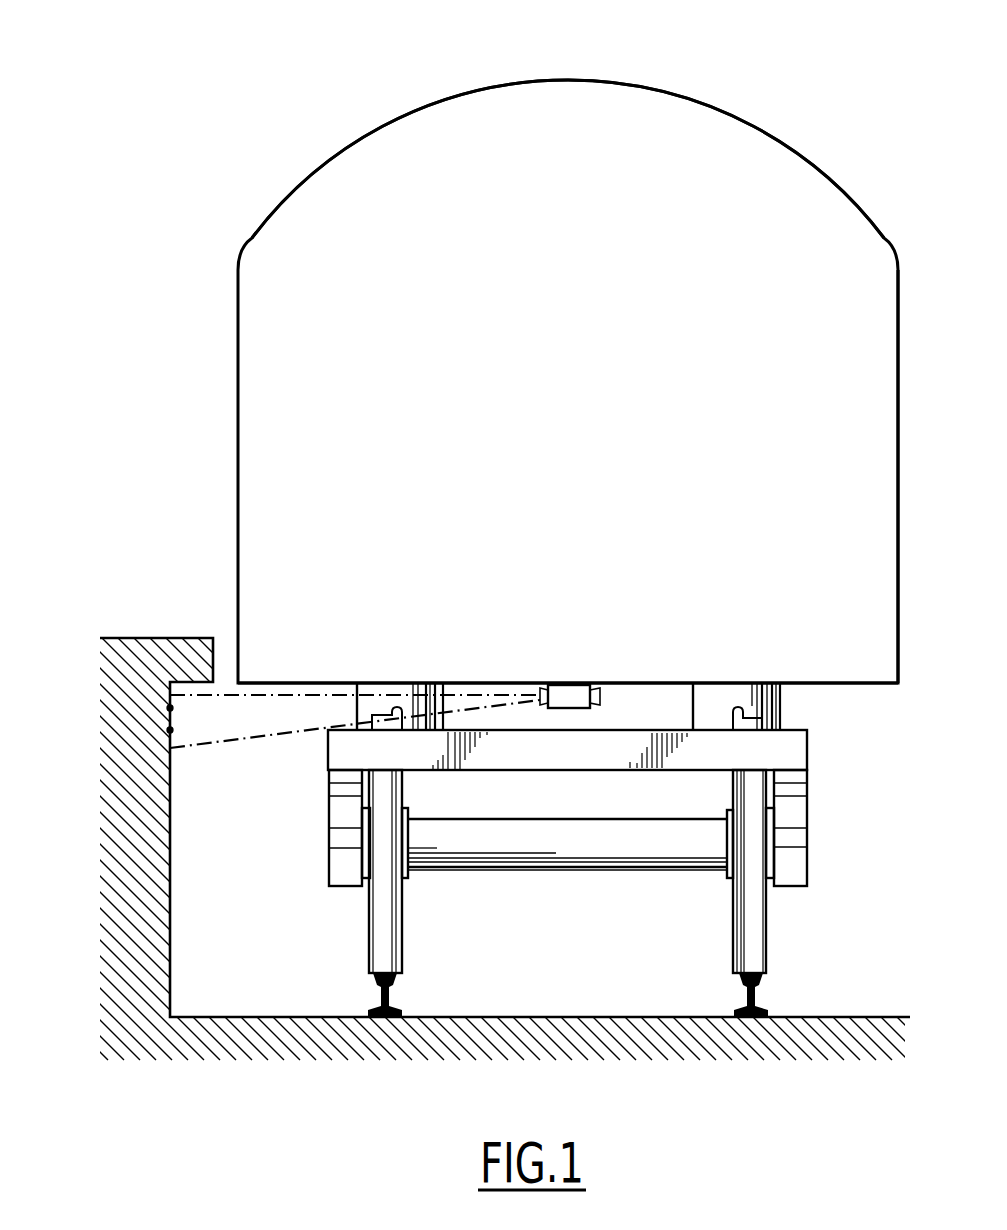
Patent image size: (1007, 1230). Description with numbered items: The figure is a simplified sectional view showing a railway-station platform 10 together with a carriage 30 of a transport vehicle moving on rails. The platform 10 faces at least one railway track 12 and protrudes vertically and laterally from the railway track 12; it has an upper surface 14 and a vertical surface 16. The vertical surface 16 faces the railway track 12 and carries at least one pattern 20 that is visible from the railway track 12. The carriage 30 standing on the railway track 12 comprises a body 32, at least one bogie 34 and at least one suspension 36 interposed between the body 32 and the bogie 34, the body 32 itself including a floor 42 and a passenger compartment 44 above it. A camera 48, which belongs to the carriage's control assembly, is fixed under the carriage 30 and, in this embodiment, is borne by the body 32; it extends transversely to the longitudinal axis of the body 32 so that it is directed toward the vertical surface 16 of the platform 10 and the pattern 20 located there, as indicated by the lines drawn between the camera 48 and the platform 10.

The platform 10 is at (75, 628).
The railway track 12 is at (766, 1044).
The upper surface 14 is at (150, 637).
The vertical surface 16 is at (172, 970).
The pattern 20 is at (194, 744).
The carriage 30 is at (836, 143).
The body 32 is at (901, 437).
The bogie 34 is at (800, 812).
The suspension 36 is at (781, 705).
The floor 42 is at (870, 680).
The passenger compartment 44 is at (697, 125).
The camera 48 is at (569, 687).